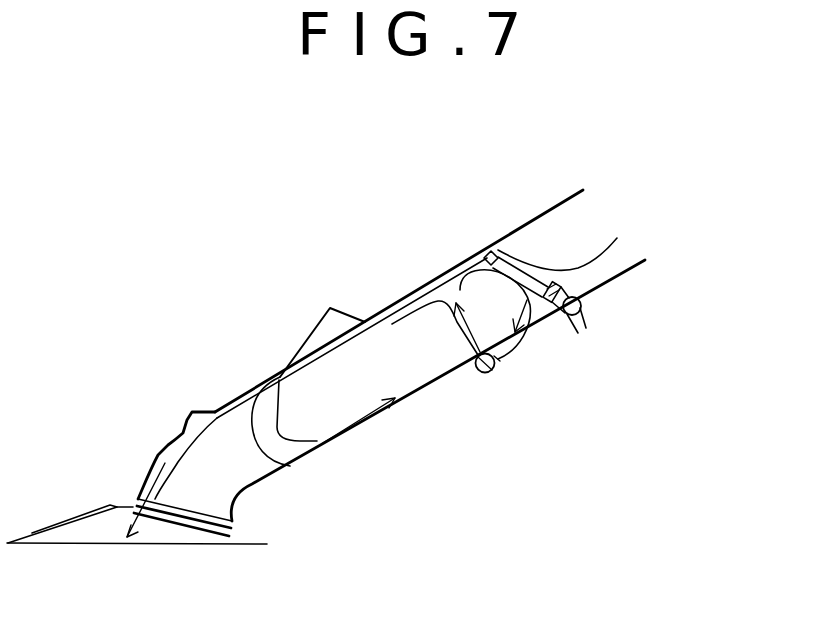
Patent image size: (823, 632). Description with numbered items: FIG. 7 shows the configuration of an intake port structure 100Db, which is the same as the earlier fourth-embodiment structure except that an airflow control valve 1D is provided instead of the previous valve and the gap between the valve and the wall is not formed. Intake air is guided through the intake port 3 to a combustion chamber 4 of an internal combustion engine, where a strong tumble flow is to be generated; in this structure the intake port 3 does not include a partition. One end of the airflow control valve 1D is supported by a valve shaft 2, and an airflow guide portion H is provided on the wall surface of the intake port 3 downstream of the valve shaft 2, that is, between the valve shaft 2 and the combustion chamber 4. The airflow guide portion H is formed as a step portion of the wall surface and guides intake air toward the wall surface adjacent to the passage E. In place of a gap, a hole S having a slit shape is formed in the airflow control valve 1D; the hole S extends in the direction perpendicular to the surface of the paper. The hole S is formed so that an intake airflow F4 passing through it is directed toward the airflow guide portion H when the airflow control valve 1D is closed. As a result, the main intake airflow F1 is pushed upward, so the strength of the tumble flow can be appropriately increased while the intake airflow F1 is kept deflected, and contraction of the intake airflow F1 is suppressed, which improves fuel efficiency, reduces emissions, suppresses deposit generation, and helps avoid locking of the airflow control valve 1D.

The intake port structure 100Db is at (689, 197).
The airflow control valve 1D is at (530, 280).
The valve shaft 2 is at (578, 318).
The intake port 3 is at (290, 348).
The combustion chamber 4 is at (88, 532).
The passage E is at (489, 251).
The airflow guide portion H is at (484, 374).
The hole S is at (562, 316).
The intake airflow F1 is at (598, 252).
The intake airflow F4 is at (505, 360).